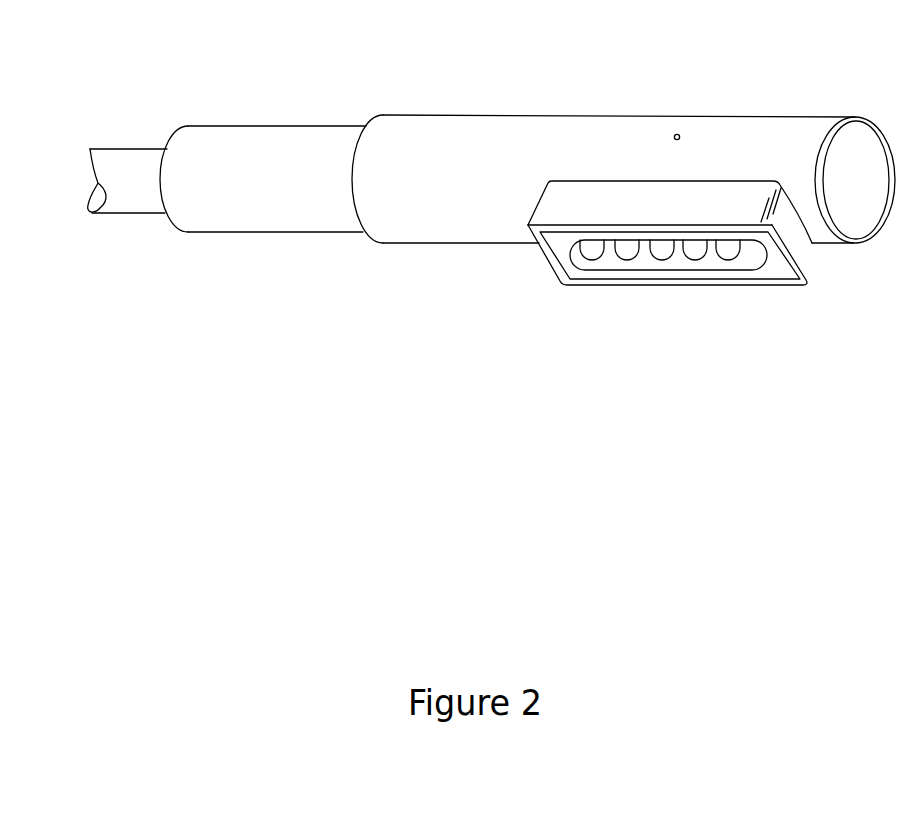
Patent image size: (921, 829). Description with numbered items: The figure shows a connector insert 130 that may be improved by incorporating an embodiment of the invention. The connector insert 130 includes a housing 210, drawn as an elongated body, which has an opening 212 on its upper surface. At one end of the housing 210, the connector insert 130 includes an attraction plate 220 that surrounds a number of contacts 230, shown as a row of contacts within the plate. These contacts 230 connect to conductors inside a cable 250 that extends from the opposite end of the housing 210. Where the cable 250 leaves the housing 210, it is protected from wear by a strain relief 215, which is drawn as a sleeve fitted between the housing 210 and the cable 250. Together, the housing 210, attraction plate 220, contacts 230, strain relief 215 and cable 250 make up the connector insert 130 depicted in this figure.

The connector insert 130 is at (537, 74).
The housing 210 is at (793, 133).
The opening 212 is at (678, 133).
The strain relief 215 is at (303, 213).
The attraction plate 220 is at (817, 245).
The contacts 230 is at (627, 254).
The cable 250 is at (140, 203).